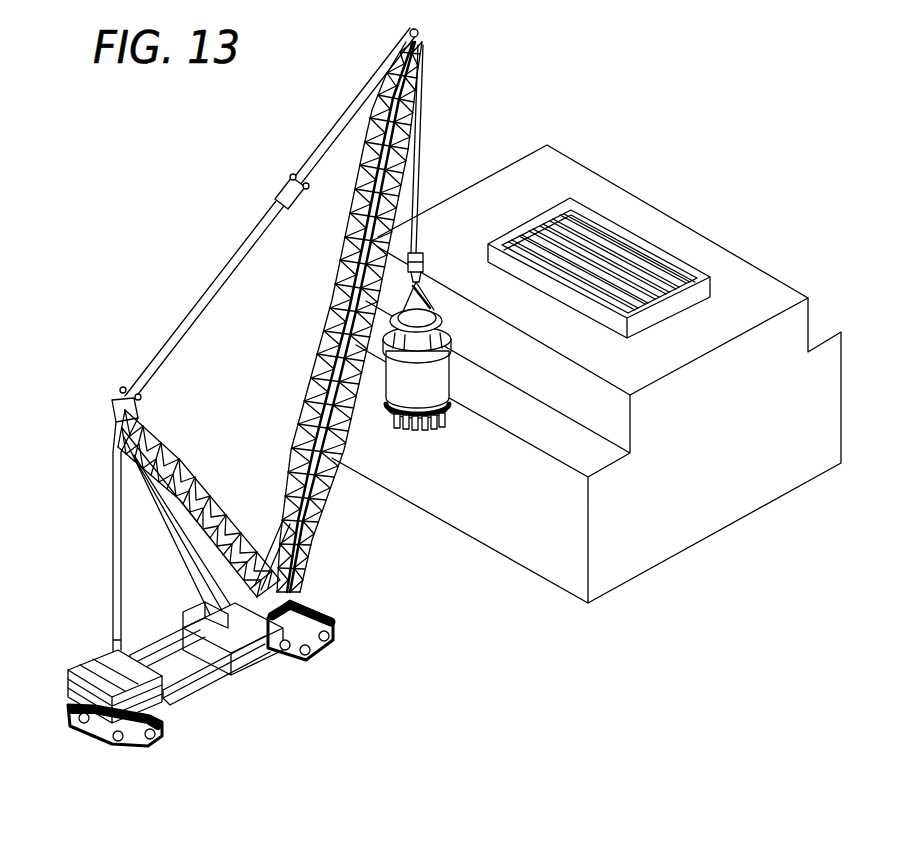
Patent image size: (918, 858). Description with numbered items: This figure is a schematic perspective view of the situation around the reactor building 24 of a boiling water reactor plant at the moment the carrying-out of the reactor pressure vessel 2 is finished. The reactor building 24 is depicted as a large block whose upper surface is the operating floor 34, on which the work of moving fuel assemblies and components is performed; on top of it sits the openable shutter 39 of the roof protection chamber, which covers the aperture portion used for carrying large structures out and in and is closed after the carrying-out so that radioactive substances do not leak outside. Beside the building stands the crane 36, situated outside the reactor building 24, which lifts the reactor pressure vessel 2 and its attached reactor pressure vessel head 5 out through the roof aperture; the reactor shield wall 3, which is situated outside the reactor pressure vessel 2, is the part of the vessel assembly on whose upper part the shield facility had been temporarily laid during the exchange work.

The reactor pressure vessel 2 is at (442, 339).
The reactor shield wall 3 is at (437, 367).
The reactor pressure vessel head 5 is at (427, 308).
The reactor building 24 is at (713, 243).
The operating floor 34 is at (713, 285).
The crane 36 is at (305, 160).
The shutter 39 is at (607, 230).